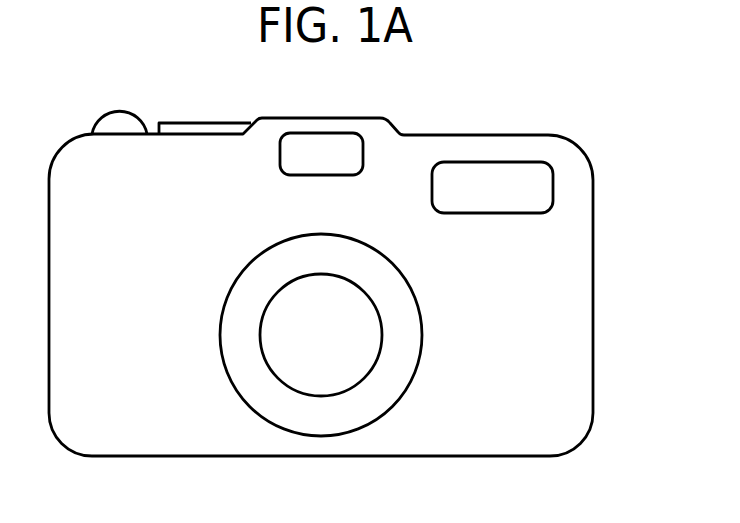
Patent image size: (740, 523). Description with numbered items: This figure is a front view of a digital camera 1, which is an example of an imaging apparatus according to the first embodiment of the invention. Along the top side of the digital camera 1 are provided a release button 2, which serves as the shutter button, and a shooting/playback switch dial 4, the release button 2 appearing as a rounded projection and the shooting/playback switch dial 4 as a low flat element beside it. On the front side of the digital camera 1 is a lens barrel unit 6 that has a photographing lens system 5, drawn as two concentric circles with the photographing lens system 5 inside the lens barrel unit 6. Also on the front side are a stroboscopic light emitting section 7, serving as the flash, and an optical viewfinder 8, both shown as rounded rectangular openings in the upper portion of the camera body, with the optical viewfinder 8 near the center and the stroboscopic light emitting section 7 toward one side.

The digital camera 1 is at (616, 108).
The release button 2 is at (118, 124).
The shooting/playback switch dial 4 is at (210, 128).
The photographing lens system 5 is at (318, 380).
The lens barrel unit 6 is at (370, 408).
The stroboscopic light emitting section 7 is at (492, 172).
The optical viewfinder 8 is at (323, 142).